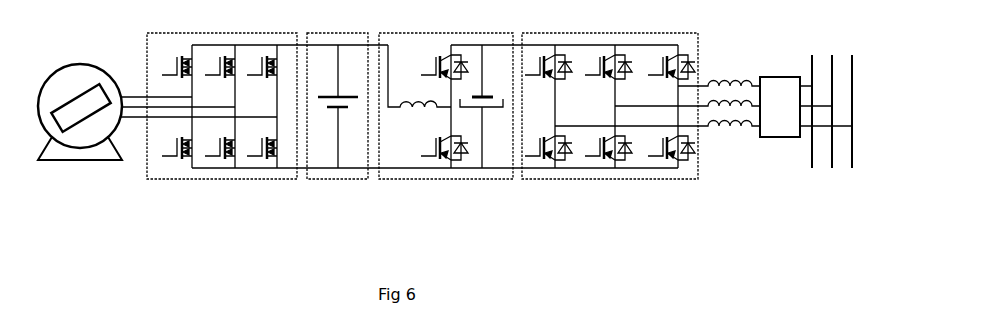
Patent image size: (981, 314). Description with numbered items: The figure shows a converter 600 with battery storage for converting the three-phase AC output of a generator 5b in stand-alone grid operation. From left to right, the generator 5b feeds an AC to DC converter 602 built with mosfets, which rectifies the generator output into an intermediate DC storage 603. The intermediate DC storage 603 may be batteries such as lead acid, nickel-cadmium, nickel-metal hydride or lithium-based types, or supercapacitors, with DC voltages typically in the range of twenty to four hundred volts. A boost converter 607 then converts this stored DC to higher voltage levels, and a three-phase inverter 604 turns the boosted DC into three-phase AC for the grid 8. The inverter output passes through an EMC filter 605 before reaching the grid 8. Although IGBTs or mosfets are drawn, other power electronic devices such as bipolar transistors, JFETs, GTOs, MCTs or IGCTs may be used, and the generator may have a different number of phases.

The generator 5b is at (80, 99).
The converter 600 is at (420, 131).
The AC to DC converter 602 is at (222, 92).
The intermediate DC storage 603 is at (337, 92).
The boost converter 607 is at (446, 92).
The three-phase inverter 604 is at (610, 92).
The EMC filter 605 is at (780, 107).
The grid 8 is at (826, 93).